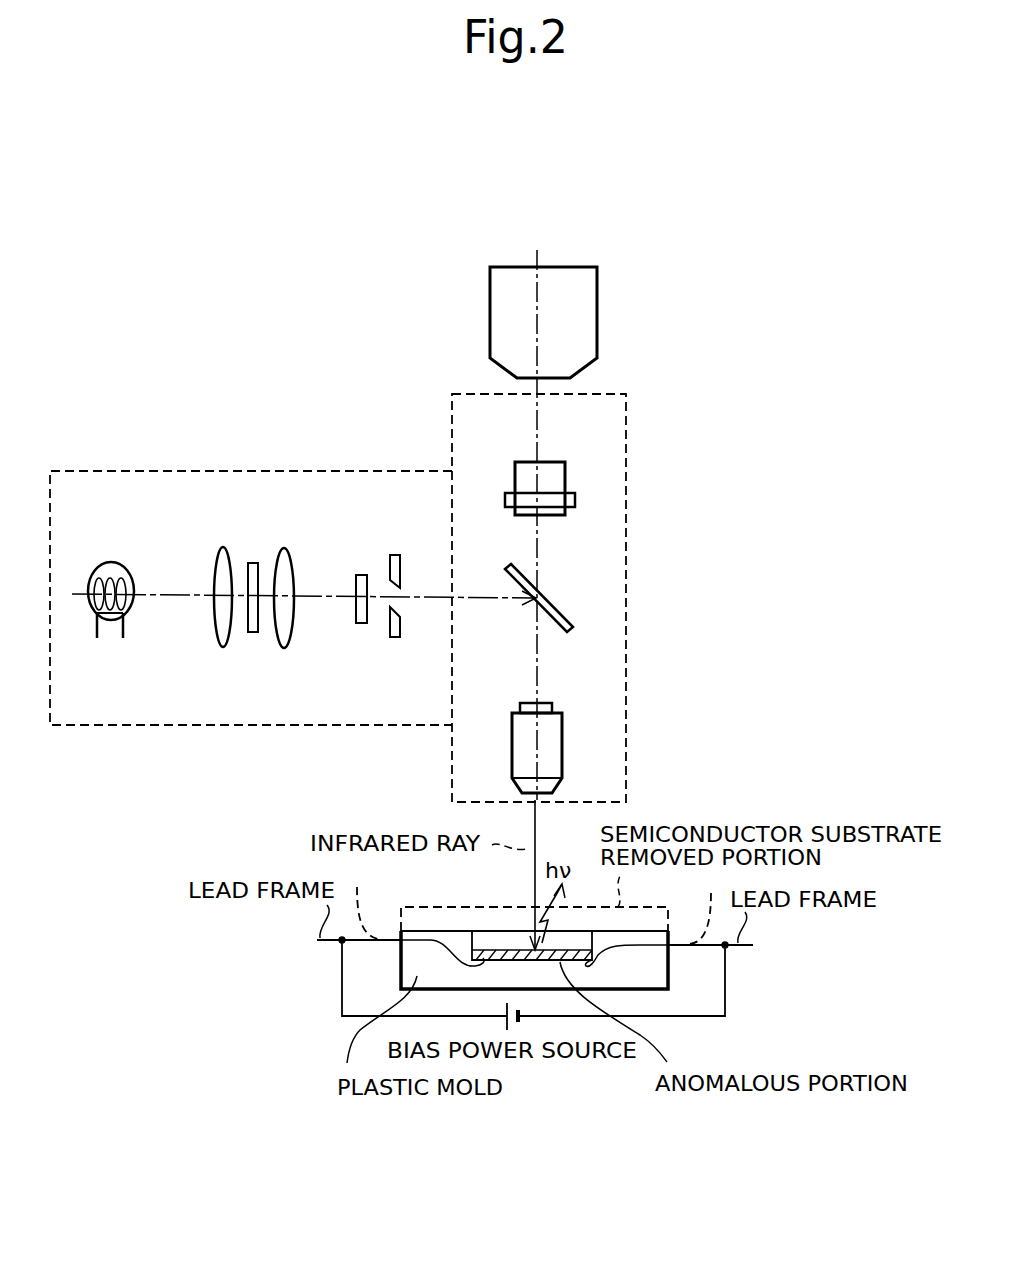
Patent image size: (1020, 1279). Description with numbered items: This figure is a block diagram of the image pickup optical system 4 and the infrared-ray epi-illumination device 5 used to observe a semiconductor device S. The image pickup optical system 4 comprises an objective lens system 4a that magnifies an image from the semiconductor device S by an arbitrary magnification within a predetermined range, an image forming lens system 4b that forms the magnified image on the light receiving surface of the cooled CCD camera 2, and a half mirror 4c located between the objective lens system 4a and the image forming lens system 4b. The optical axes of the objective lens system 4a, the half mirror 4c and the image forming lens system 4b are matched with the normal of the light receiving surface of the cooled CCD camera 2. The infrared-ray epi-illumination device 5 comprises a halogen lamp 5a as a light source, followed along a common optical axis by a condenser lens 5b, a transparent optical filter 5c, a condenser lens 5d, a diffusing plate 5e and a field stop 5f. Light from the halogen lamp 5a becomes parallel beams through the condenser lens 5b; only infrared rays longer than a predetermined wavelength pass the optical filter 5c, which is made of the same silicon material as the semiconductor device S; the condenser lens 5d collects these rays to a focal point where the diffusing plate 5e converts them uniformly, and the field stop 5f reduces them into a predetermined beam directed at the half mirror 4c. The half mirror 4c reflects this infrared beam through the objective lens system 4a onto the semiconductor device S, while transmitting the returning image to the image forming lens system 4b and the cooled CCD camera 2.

The cooled CCD camera 2 is at (597, 332).
The image pickup optical system 4 is at (628, 545).
The objective lens system 4a is at (562, 762).
The image forming lens system 4b is at (565, 482).
The half mirror 4c is at (552, 603).
The infrared-ray epi-illumination device 5 is at (224, 471).
The halogen lamp 5a is at (97, 626).
The condenser lens 5b is at (217, 558).
The transparent optical filter 5c is at (252, 634).
The condenser lens 5d is at (283, 552).
The diffusing plate 5e is at (358, 578).
The field stop 5f is at (394, 640).
The semiconductor device S is at (672, 966).